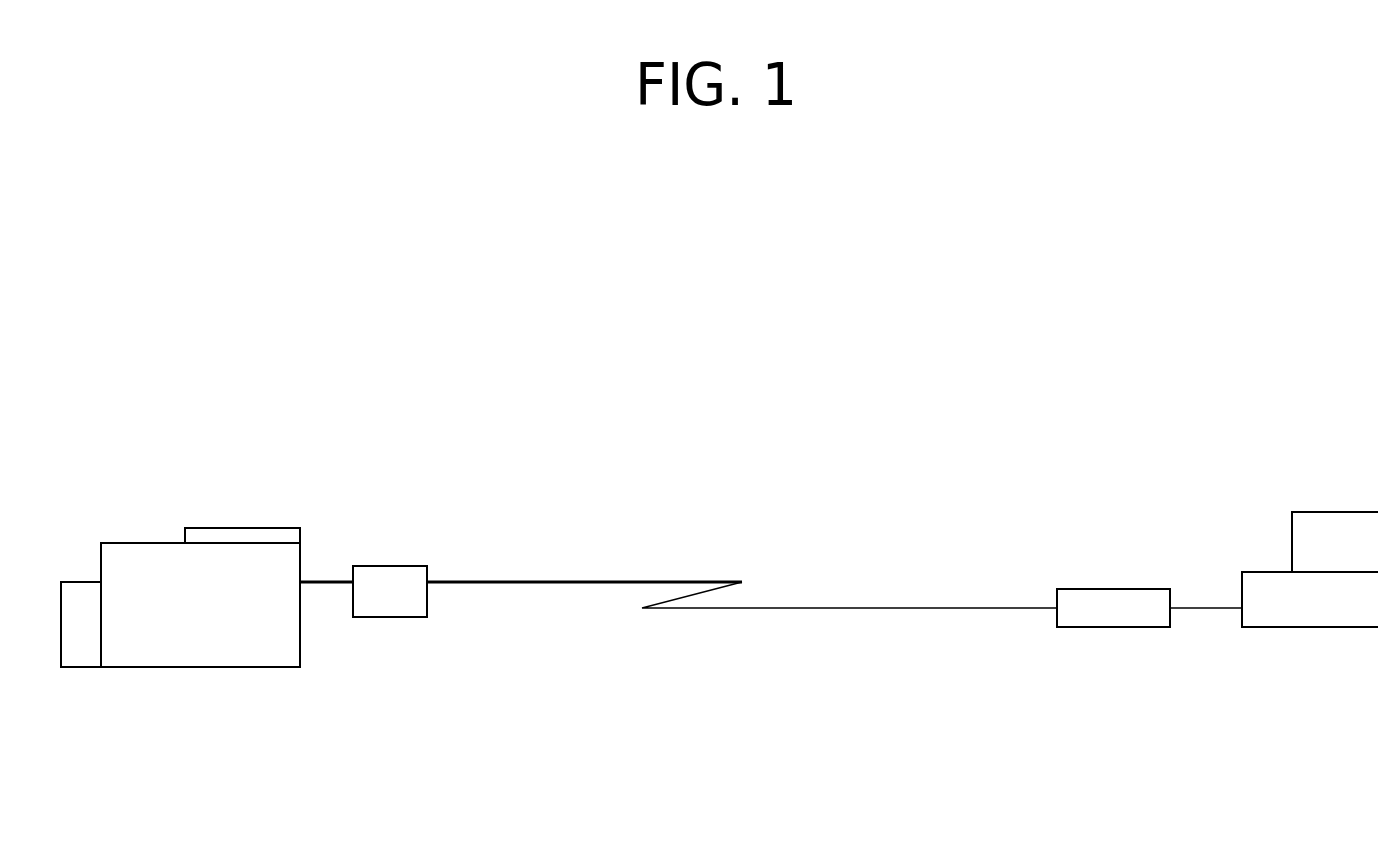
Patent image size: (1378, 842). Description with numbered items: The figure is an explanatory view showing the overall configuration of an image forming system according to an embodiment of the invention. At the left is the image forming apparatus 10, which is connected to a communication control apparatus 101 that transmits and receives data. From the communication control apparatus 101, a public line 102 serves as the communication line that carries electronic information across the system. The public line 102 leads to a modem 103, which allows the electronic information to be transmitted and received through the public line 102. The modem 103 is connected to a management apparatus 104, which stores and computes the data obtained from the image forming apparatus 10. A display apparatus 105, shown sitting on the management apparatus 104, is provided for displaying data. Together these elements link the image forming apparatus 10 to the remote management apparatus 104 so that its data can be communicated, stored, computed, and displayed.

The image forming apparatus 10 is at (183, 668).
The communication control apparatus 101 is at (382, 617).
The public line 102 is at (692, 581).
The modem 103 is at (1103, 589).
The management apparatus 104 is at (1327, 628).
The display apparatus 105 is at (1337, 512).